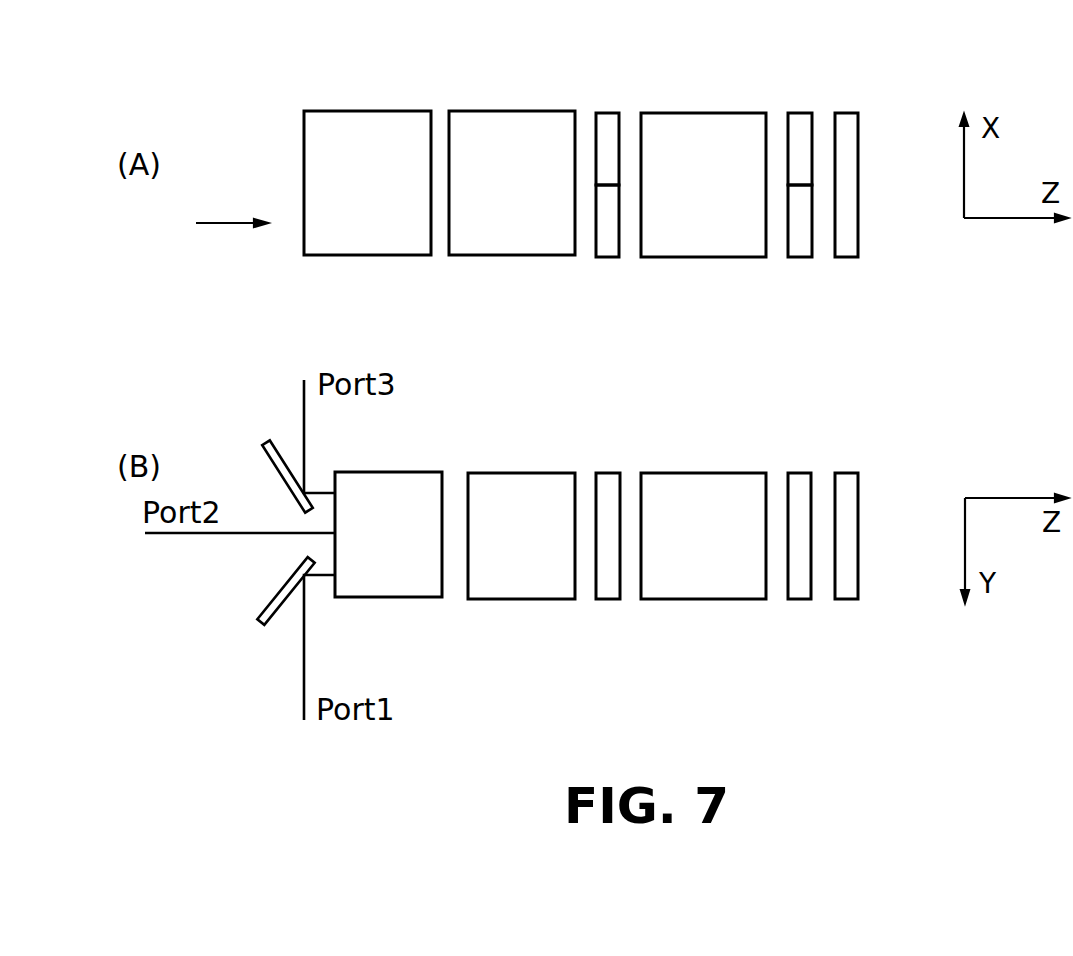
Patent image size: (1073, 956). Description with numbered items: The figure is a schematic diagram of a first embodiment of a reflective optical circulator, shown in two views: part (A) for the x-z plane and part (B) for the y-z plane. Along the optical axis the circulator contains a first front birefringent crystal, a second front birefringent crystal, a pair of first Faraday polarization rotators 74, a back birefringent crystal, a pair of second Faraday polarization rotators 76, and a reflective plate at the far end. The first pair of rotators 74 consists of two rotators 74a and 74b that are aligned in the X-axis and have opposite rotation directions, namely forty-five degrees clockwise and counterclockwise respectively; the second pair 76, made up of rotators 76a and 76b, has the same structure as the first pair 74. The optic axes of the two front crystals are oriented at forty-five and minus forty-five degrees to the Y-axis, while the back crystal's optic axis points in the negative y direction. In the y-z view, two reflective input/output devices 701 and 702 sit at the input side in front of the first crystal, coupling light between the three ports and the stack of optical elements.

The pair of first Faraday polarization rotators 74 is at (607, 585).
The first Faraday polarization rotator 74a is at (606, 130).
The first Faraday polarization rotator 74b is at (611, 240).
The pair of second Faraday polarization rotators 76 is at (798, 587).
The second Faraday polarization rotator 76a is at (798, 130).
The second Faraday polarization rotator 76b is at (803, 240).
The reflective input/output device 701 is at (274, 622).
The reflective input/output device 702 is at (263, 452).